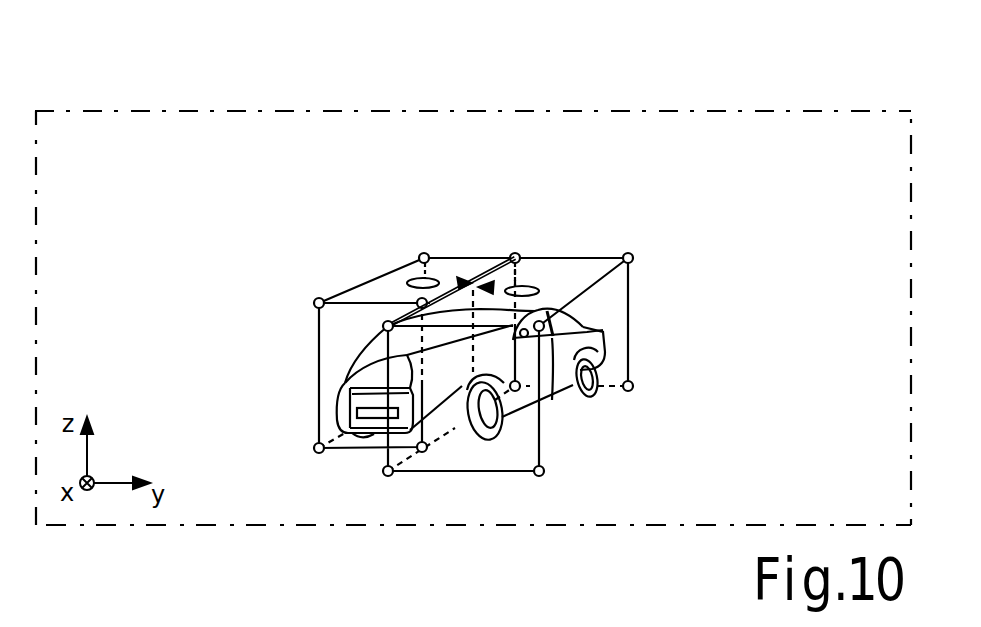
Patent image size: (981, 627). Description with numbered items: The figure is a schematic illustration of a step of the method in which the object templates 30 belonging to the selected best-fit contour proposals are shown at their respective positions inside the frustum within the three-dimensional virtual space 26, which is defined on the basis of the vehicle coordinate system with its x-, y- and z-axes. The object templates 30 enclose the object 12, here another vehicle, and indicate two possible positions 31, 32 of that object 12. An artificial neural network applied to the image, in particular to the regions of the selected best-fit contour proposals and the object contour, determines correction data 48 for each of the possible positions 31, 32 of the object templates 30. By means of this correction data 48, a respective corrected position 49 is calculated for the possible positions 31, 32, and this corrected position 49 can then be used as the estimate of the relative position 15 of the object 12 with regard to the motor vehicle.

The object 12 is at (557, 348).
The relative position 15 is at (467, 417).
The virtual space 26 is at (233, 110).
The object templates 30 is at (366, 280).
The first possible position 31 is at (427, 278).
The second possible position 32 is at (537, 284).
The correction data 48 is at (442, 284).
The corrected position 49 is at (382, 322).